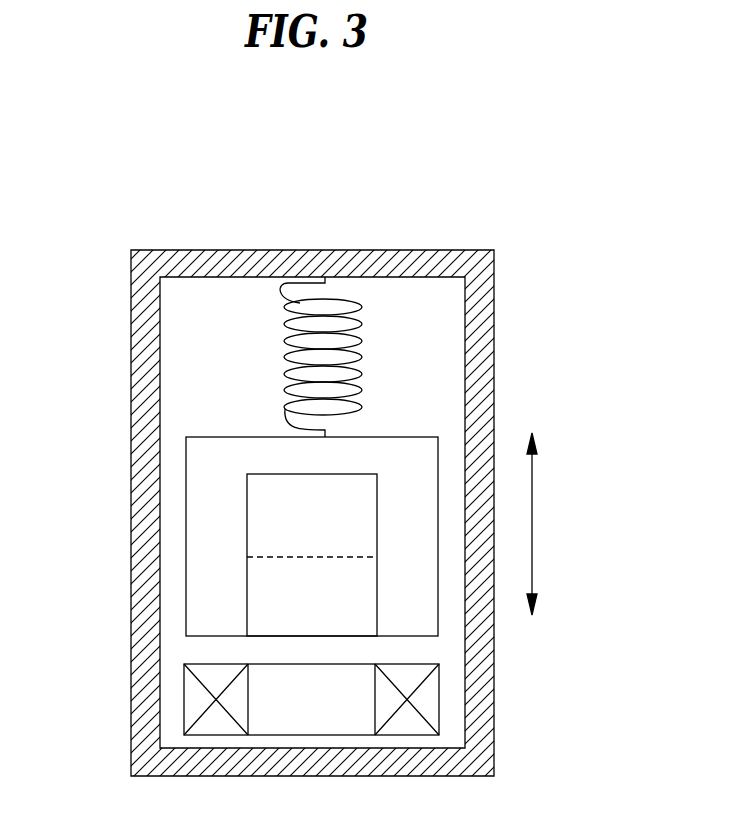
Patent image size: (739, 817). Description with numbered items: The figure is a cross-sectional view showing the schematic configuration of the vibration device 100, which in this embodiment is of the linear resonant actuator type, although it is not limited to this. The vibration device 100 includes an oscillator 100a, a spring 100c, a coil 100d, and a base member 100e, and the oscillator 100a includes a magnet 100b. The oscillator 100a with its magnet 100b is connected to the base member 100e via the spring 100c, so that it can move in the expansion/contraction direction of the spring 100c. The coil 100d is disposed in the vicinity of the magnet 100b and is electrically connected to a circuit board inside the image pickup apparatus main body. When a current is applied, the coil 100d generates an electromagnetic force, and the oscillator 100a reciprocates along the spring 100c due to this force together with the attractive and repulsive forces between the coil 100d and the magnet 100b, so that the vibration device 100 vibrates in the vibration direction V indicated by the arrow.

The vibration device 100 is at (488, 223).
The oscillator 100a is at (207, 468).
The magnet 100b is at (262, 542).
The spring 100c is at (303, 283).
The coil 100d is at (195, 698).
The base member 100e is at (146, 607).
The vibration direction V is at (532, 518).